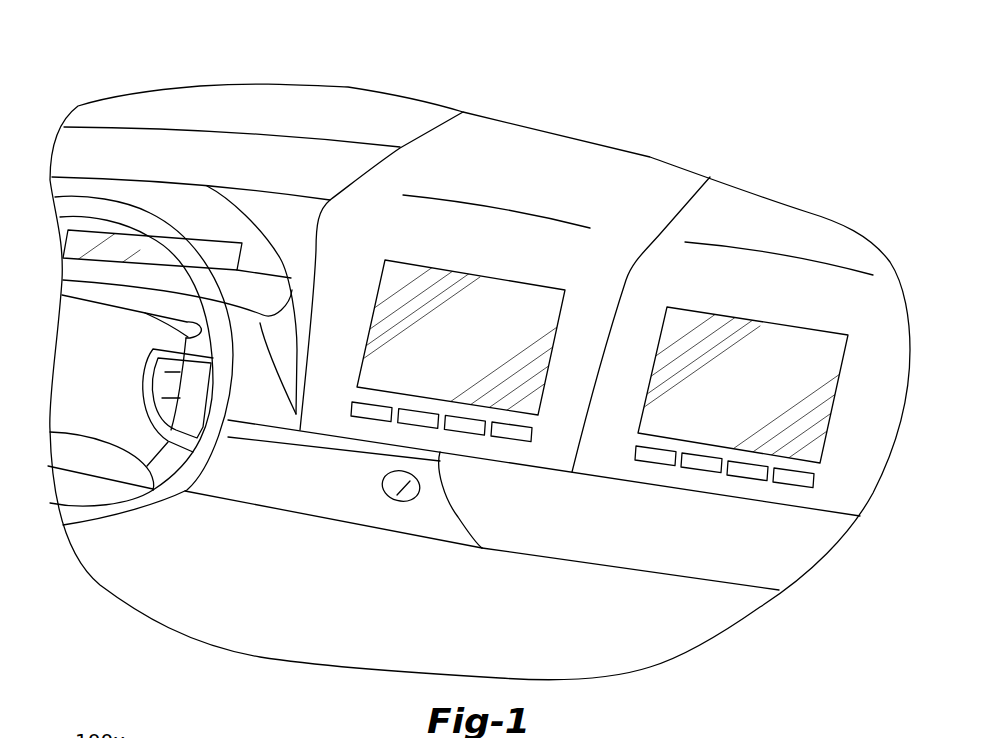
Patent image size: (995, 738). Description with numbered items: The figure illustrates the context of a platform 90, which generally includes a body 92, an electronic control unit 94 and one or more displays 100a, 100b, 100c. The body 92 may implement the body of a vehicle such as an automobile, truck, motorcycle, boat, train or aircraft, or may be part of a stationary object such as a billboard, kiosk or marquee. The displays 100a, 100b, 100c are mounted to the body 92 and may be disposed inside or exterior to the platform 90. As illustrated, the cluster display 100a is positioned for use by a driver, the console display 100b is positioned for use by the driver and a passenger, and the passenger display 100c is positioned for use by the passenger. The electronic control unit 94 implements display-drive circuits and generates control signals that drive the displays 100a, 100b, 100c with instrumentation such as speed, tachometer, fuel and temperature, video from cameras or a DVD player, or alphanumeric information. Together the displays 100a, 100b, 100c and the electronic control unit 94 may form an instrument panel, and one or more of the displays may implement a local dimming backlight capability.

The platform 90 is at (546, 58).
The body 92 is at (348, 87).
The electronic control unit 94 is at (281, 511).
The cluster display 100a is at (200, 237).
The console display 100b is at (488, 273).
The passenger display 100c is at (772, 322).